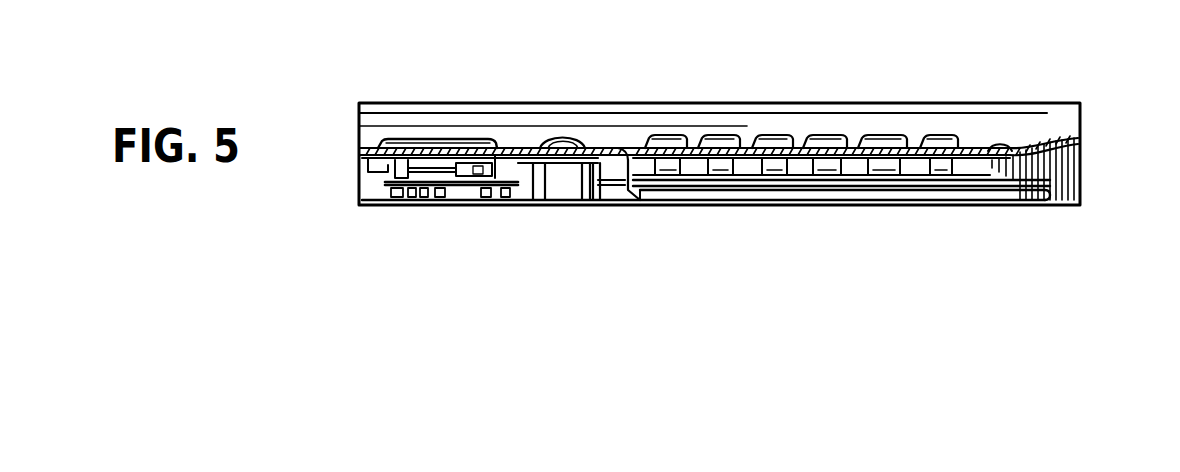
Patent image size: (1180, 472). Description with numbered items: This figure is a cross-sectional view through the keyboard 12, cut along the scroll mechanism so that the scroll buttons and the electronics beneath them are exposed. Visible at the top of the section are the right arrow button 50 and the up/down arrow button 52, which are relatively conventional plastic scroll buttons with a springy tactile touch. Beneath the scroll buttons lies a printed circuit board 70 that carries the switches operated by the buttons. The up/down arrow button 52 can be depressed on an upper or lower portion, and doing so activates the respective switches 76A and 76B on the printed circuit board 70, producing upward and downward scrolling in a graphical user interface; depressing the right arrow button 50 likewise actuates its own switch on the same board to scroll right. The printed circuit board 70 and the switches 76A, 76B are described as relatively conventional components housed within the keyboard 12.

The keyboard housing 12 is at (1080, 140).
The right arrow button 50 is at (437, 140).
The up/down arrow button 52 is at (402, 142).
The printed circuit board 70 is at (436, 185).
The switch 76A is at (391, 190).
The switch 76B is at (481, 185).